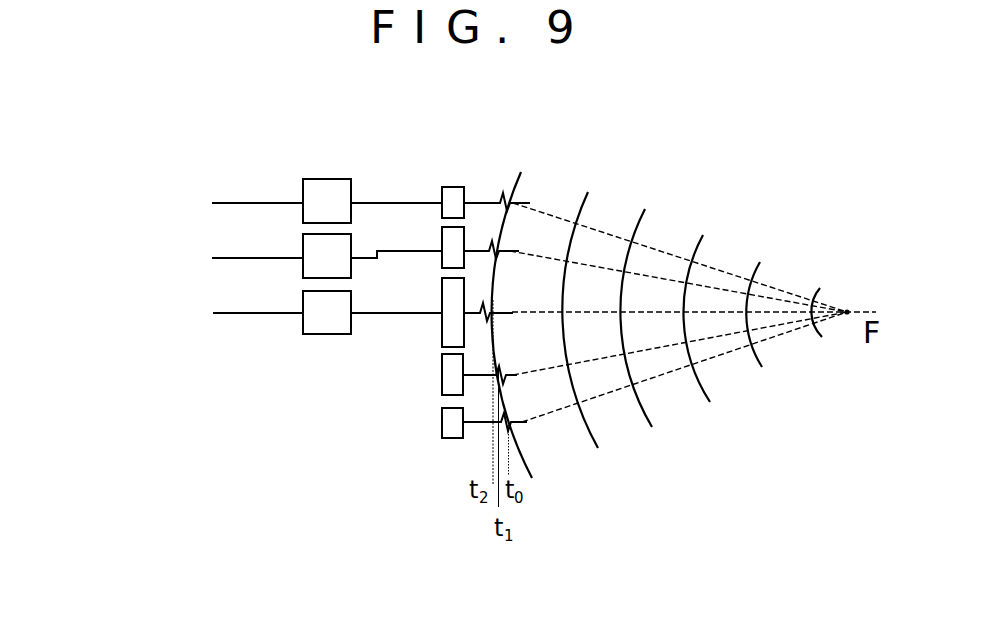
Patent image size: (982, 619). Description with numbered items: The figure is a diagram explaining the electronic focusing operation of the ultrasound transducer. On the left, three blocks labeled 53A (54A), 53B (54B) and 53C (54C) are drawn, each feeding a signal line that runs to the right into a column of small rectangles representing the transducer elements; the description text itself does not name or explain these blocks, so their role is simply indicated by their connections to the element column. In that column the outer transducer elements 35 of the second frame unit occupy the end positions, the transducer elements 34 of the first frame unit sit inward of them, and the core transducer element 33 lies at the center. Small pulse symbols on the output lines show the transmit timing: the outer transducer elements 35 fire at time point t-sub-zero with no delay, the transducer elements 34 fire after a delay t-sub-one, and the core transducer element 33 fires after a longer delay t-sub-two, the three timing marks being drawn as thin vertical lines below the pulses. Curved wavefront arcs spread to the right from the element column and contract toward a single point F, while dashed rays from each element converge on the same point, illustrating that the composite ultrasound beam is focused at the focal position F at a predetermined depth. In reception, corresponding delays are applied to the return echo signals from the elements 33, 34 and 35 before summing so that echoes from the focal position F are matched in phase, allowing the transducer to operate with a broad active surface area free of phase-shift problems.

The core transducer element 33 is at (448, 328).
The transducer elements of the first frame unit 34 is at (450, 257).
The transducer elements of the second frame unit 35 is at (458, 194).
The driving circuit for outer element 53A is at (214, 169).
The delay circuit for outer element 54A is at (303, 185).
The driving circuit for intermediate element 53B is at (200, 240).
The delay circuit for intermediate element 54B is at (308, 248).
The driving circuit for central element 53C is at (208, 333).
The delay circuit for central element 54C is at (310, 322).